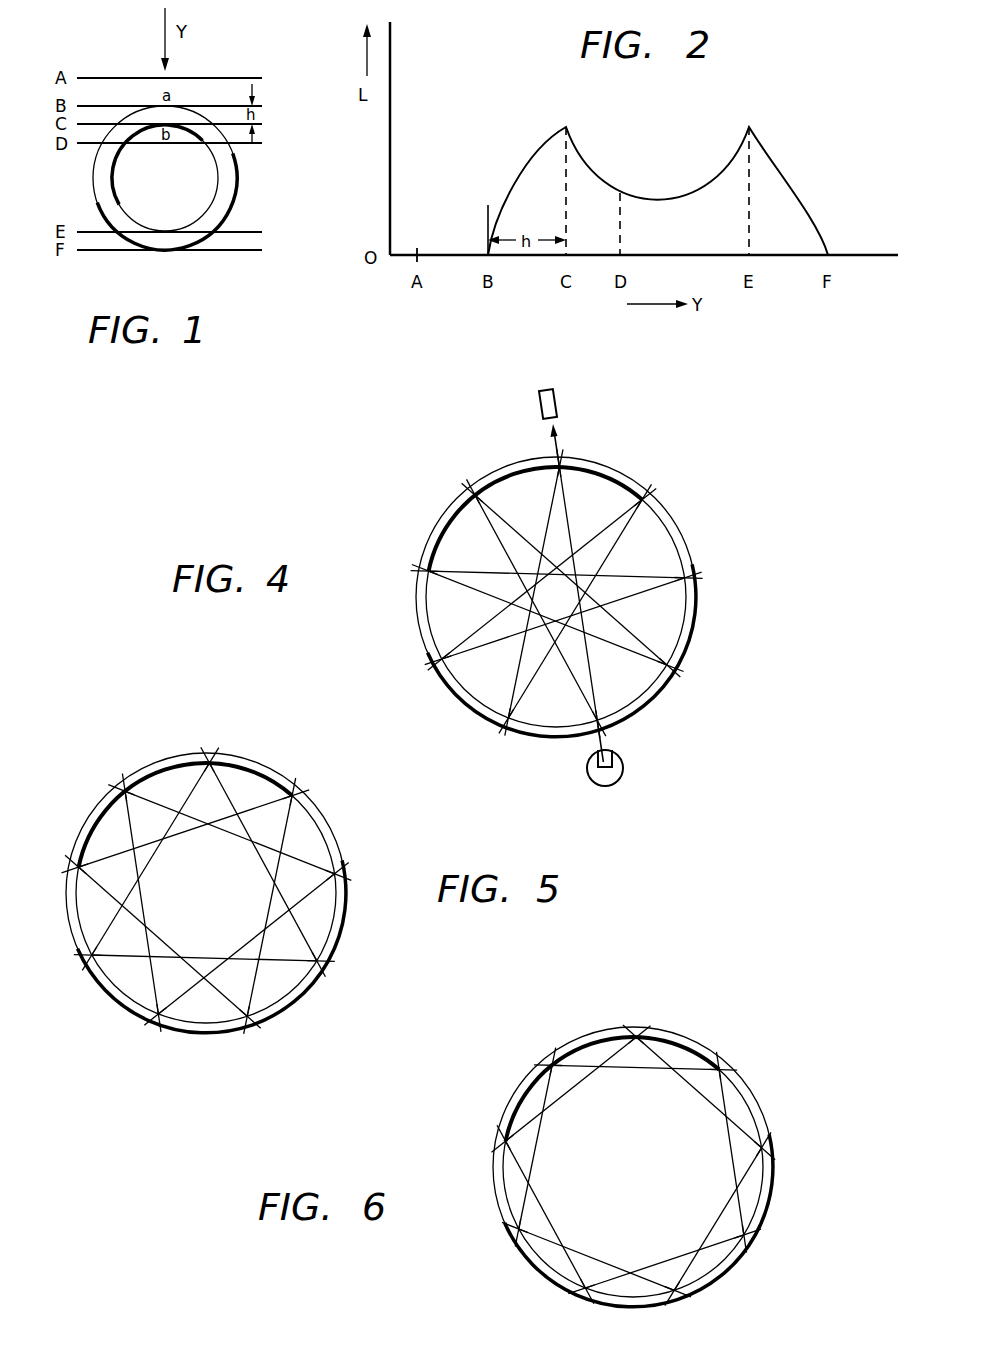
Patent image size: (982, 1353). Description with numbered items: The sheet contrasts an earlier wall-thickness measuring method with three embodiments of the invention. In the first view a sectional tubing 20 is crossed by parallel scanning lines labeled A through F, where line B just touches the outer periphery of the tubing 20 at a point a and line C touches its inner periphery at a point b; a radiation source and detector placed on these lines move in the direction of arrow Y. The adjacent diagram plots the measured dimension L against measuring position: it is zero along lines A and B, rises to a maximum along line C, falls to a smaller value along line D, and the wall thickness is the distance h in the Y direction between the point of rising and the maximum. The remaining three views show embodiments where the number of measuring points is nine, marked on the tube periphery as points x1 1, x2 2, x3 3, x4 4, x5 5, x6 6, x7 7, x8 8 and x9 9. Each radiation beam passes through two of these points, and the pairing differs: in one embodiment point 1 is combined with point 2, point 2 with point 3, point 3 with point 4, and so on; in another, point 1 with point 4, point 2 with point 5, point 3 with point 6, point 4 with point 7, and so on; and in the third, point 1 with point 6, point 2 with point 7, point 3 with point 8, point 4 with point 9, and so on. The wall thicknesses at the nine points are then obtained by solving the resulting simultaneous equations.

In FIG. 1, the tubing 20 is at (226, 185).
In FIG. 4, the measuring point x1 1 is at (574, 448).
In FIG. 5, the measuring point x1 1 is at (214, 744).
In FIG. 6, the measuring point x1 1 is at (639, 1020).
In FIG. 4, the measuring point x2 2 is at (613, 737).
In FIG. 5, the measuring point x2 2 is at (263, 1034).
In FIG. 6, the measuring point x2 2 is at (684, 1311).
In FIG. 4, the measuring point x3 3 is at (460, 480).
In FIG. 5, the measuring point x3 3 is at (111, 775).
In FIG. 6, the measuring point x3 3 is at (542, 1050).
In FIG. 4, the measuring point x4 4 is at (686, 679).
In FIG. 5, the measuring point x4 4 is at (336, 974).
In FIG. 6, the measuring point x4 4 is at (759, 1247).
In FIG. 4, the measuring point x5 5 is at (410, 566).
In FIG. 5, the measuring point x5 5 is at (60, 869).
In FIG. 6, the measuring point x5 5 is at (488, 1134).
In FIG. 4, the measuring point x6 6 is at (706, 575).
In FIG. 5, the measuring point x6 6 is at (355, 871).
In FIG. 6, the measuring point x6 6 is at (783, 1149).
In FIG. 4, the measuring point x7 7 is at (424, 673).
In FIG. 5, the measuring point x7 7 is at (77, 968).
In FIG. 6, the measuring point x7 7 is at (501, 1238).
In FIG. 4, the measuring point x8 8 is at (658, 484).
In FIG. 5, the measuring point x8 8 is at (308, 781).
In FIG. 6, the measuring point x8 8 is at (734, 1057).
In FIG. 4, the measuring point x9 9 is at (495, 738).
In FIG. 5, the measuring point x9 9 is at (144, 1031).
In FIG. 6, the measuring point x9 9 is at (578, 1308).